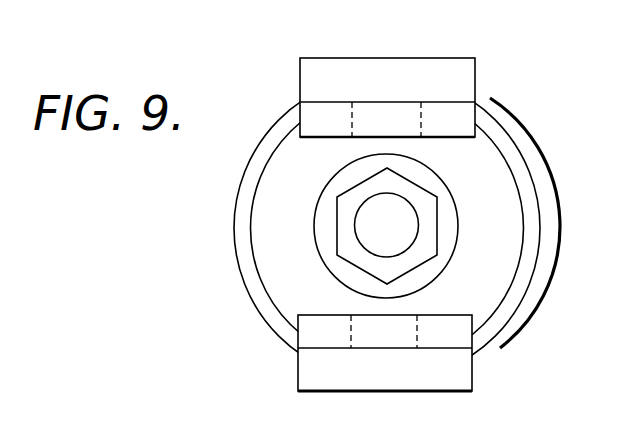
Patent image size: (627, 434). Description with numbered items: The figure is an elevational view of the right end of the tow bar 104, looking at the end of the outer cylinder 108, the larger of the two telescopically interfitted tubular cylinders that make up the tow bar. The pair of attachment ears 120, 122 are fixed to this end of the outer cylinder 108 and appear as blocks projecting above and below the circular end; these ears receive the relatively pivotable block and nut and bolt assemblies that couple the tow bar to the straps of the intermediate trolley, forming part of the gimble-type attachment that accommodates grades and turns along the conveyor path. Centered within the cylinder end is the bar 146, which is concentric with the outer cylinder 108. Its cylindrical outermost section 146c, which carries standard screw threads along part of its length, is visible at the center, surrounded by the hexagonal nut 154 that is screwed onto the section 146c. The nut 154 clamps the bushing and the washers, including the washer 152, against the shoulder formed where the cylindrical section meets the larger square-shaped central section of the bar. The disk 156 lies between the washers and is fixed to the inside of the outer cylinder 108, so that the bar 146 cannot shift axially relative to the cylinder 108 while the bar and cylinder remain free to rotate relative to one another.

The tow bar 104 is at (508, 131).
The outer cylinder 108 is at (523, 277).
The attachment ear 120 is at (407, 73).
The attachment ear 122 is at (317, 367).
The bar 146 is at (368, 222).
The cylindrical outermost section 146c is at (398, 200).
The washer 152 is at (452, 230).
The nut 154 is at (408, 258).
The disk 156 is at (272, 258).